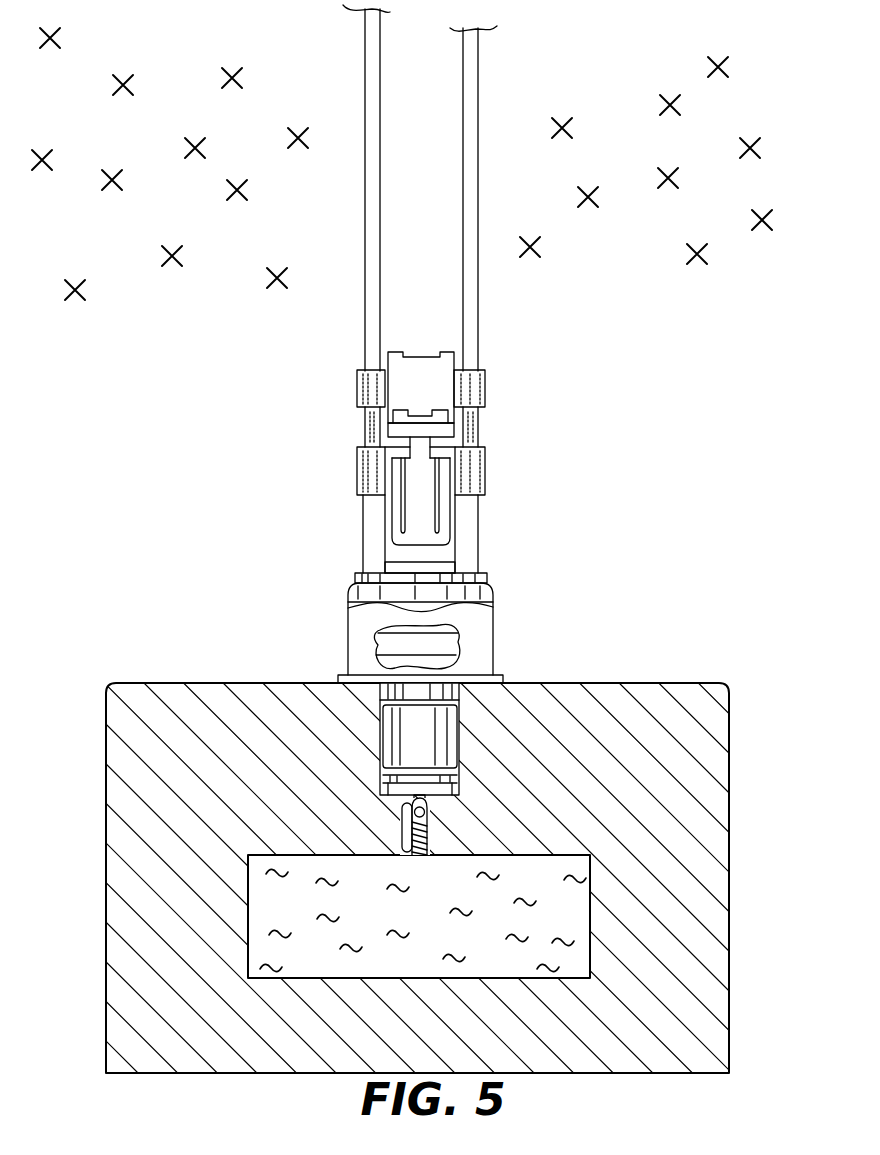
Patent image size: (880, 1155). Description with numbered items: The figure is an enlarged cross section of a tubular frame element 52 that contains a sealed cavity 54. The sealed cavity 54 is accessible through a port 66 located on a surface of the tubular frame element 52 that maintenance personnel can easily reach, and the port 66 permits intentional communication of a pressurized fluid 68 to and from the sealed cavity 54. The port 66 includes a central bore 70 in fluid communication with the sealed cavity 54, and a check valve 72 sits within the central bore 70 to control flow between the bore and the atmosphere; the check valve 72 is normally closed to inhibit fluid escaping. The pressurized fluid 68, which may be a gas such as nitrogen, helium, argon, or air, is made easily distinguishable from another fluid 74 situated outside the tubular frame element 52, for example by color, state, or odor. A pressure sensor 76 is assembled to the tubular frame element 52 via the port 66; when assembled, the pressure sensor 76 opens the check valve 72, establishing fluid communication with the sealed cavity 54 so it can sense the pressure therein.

The tubular frame element 52 is at (697, 903).
The sealed cavity 54 is at (247, 910).
The port 66 is at (459, 722).
The pressurized fluid 68 is at (591, 937).
The central bore 70 is at (428, 825).
The check valve 72 is at (406, 826).
The fluid 74 is at (562, 126).
The pressure sensor 76 is at (366, 434).